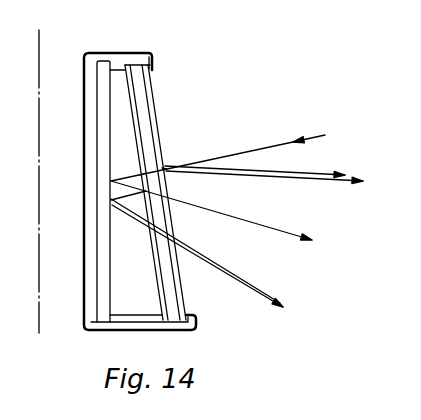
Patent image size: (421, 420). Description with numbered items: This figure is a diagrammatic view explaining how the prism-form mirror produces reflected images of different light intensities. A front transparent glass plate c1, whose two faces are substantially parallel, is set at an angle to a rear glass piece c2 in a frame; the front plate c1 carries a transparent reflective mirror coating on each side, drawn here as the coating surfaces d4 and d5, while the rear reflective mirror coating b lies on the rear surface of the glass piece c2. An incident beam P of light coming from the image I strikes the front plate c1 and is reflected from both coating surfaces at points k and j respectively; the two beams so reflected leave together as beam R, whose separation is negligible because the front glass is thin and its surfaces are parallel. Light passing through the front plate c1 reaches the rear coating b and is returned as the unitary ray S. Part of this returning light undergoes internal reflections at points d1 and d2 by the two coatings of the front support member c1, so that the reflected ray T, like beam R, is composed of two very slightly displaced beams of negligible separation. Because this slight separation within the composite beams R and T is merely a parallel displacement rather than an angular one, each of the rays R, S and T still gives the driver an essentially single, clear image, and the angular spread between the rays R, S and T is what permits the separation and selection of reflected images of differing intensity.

The front transparent member c1 is at (127, 192).
The rear glass piece c2 is at (106, 258).
The internal reflection point d1 is at (168, 200).
The internal reflection point d2 is at (146, 190).
The reflecting layer d4 is at (158, 129).
The reflecting layer d5 is at (141, 138).
The rear reflective mirror coating b is at (112, 274).
The reflection point j is at (143, 173).
The reflection point k is at (164, 168).
The image I is at (315, 134).
The incident ray path P is at (207, 150).
The reflected beam R is at (264, 168).
The reflected ray S is at (211, 210).
The reflected ray T is at (197, 253).